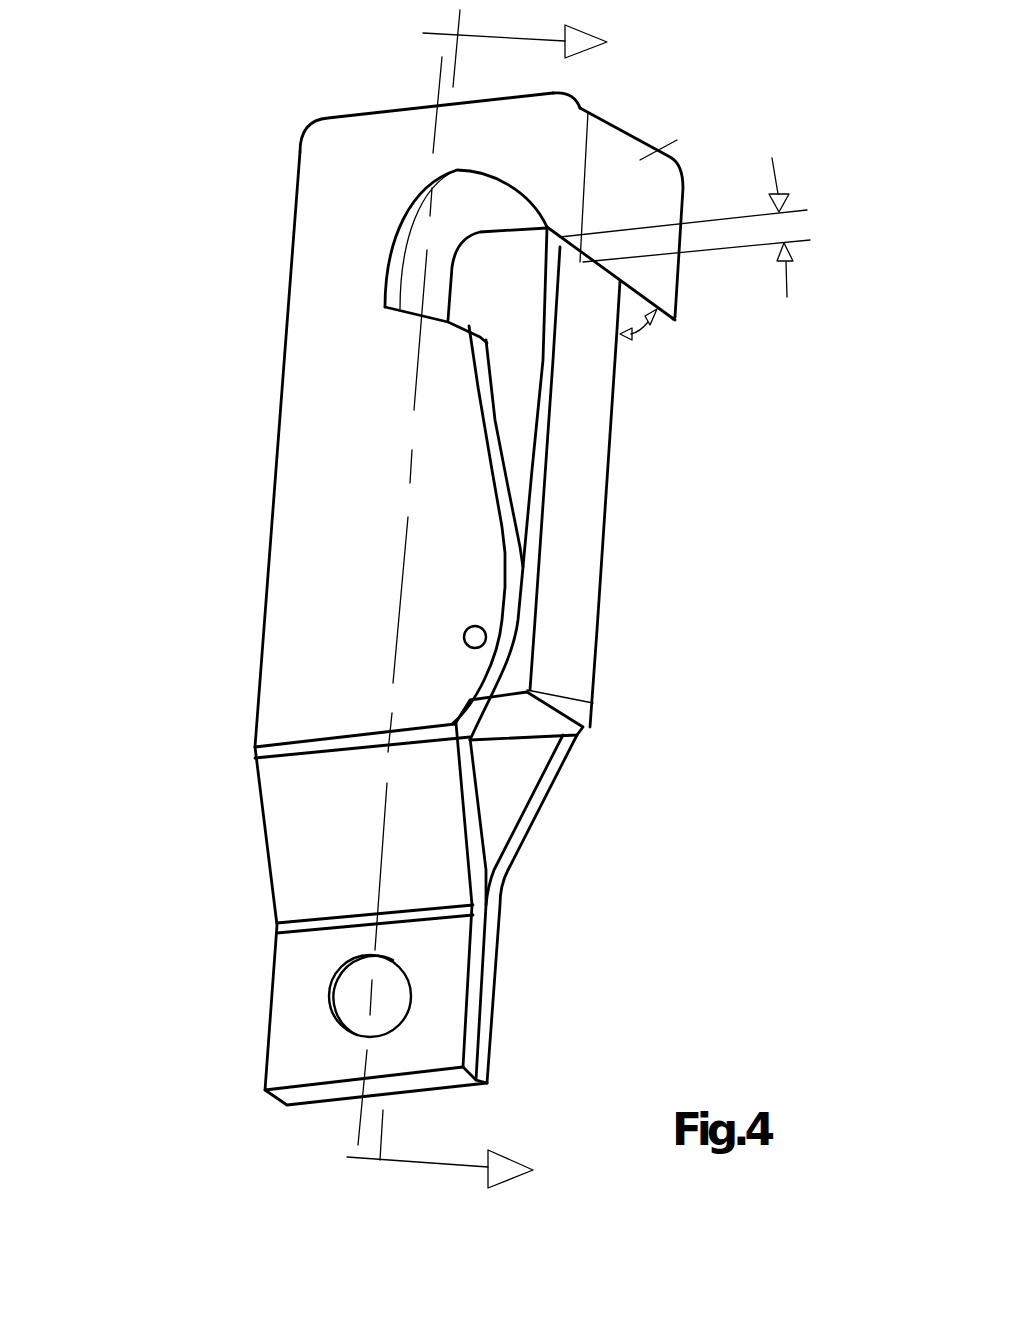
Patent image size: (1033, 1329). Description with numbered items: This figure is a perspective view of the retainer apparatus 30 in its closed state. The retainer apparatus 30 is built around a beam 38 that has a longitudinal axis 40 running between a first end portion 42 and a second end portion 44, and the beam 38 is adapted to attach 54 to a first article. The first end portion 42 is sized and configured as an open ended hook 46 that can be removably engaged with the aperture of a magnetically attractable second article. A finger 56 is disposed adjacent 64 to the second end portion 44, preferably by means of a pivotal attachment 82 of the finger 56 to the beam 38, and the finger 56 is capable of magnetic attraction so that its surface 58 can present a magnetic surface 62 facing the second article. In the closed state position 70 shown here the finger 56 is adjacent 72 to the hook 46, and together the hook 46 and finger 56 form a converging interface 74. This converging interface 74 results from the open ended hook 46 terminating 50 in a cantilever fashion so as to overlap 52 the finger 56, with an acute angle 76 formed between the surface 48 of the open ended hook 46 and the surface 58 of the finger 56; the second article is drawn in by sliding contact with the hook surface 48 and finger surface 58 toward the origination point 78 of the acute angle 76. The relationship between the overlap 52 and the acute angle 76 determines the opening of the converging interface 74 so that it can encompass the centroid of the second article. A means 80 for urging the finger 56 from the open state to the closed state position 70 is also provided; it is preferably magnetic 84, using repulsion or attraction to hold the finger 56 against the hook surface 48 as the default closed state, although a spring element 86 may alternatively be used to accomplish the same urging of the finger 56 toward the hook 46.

The retainer apparatus 30 is at (184, 174).
The beam 38 is at (255, 720).
The longitudinal axis 40 is at (437, 95).
The first end portion 42 is at (310, 183).
The second end portion 44 is at (293, 975).
The open ended hook 46 is at (557, 140).
The hook surface 48 is at (640, 160).
The terminating 50 is at (675, 317).
The overlap 52 is at (696, 285).
The attach 54 is at (338, 998).
The finger 56 is at (513, 410).
The finger surface 58 is at (584, 388).
The magnetic surface 62 is at (530, 500).
The adjacent disposing 64 is at (478, 648).
The closed state position 70 is at (480, 313).
The adjacent 72 is at (677, 140).
The converging interface 74 is at (460, 320).
The acute angle 76 is at (648, 322).
The origination point 78 is at (803, 208).
The means for urging 80 is at (557, 862).
The pivotal attachment 82 is at (485, 640).
The magnetic 84 is at (557, 862).
The spring element 86 is at (567, 917).